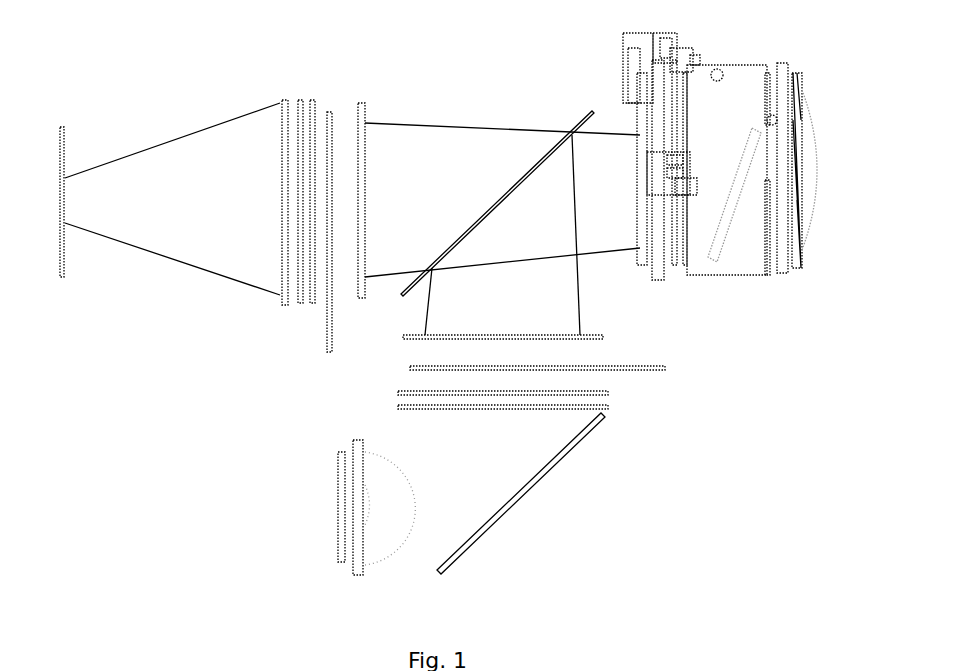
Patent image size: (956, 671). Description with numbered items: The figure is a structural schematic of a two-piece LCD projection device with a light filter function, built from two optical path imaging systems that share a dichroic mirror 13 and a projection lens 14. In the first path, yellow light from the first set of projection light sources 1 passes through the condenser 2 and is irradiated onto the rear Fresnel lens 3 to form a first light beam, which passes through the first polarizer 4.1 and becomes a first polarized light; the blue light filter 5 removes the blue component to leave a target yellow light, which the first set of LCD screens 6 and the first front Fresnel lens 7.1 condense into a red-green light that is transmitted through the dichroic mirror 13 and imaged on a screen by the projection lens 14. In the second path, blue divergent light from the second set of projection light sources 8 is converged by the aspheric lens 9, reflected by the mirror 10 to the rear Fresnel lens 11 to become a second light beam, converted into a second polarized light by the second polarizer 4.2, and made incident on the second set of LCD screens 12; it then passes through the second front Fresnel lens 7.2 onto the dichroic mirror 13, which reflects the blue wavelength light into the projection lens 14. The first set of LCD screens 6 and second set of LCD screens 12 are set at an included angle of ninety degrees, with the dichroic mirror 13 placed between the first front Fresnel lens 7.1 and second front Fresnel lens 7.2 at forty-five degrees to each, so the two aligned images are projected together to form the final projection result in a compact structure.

The first set of projection light sources 1 is at (56, 181).
The condenser 2 is at (172, 199).
The rear Fresnel lens 3 is at (282, 183).
The first polarizer 4.1 is at (310, 182).
The blue light filter 5 is at (315, 214).
The first set of LCD screens 6 is at (337, 208).
The first front Fresnel lens 7.1 is at (379, 180).
The second front Fresnel lens 7.2 is at (530, 330).
The second set of projection light sources 8 is at (328, 518).
The aspheric lens 9 is at (384, 520).
The mirror 10 is at (521, 493).
The rear Fresnel lens 11 is at (526, 409).
The second set of LCD screens 12 is at (562, 360).
The dichroic mirror 13 is at (497, 203).
The projection lens 14 is at (739, 55).
The second polarizer 4.2 is at (479, 385).